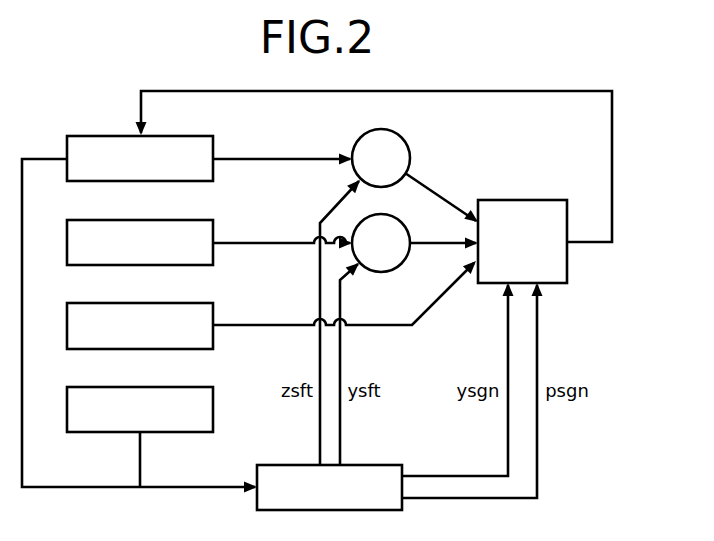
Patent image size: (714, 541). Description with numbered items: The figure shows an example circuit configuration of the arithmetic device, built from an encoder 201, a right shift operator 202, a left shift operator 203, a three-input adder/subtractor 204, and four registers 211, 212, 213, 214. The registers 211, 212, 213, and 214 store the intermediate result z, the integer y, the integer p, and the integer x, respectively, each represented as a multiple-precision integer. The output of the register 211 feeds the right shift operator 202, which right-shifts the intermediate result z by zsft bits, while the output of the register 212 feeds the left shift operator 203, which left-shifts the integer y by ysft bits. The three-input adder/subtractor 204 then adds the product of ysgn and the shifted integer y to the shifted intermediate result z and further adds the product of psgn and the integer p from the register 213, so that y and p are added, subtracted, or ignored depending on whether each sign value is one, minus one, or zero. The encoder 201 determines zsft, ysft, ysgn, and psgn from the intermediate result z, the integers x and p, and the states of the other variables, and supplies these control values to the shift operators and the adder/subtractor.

The encoder 201 is at (370, 464).
The right shift operator 202 is at (389, 130).
The left shift operator 203 is at (389, 214).
The 3-input adder/subtractor 204 is at (528, 200).
The register 211 is at (168, 135).
The register 212 is at (168, 219).
The register 213 is at (168, 301).
The register 214 is at (168, 385).